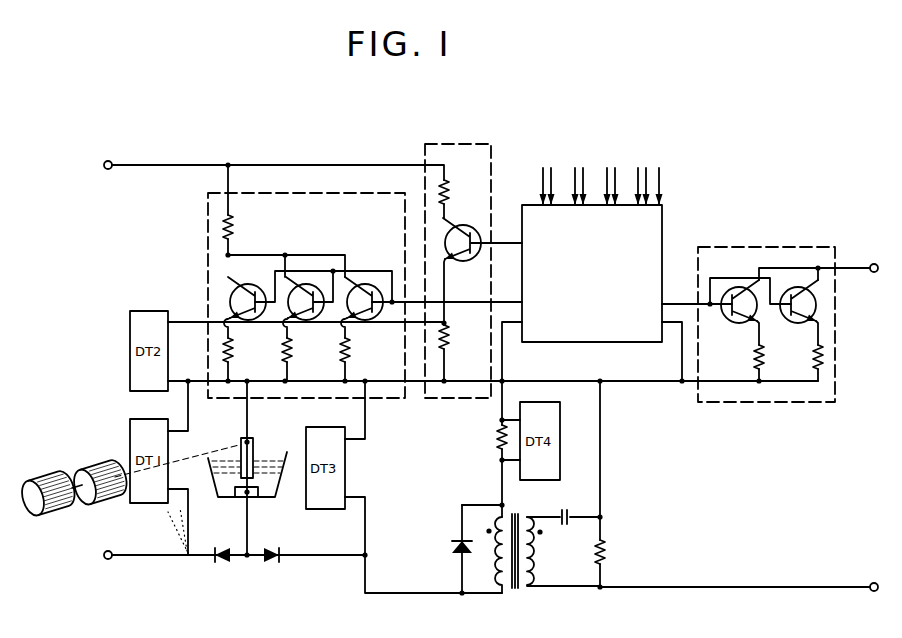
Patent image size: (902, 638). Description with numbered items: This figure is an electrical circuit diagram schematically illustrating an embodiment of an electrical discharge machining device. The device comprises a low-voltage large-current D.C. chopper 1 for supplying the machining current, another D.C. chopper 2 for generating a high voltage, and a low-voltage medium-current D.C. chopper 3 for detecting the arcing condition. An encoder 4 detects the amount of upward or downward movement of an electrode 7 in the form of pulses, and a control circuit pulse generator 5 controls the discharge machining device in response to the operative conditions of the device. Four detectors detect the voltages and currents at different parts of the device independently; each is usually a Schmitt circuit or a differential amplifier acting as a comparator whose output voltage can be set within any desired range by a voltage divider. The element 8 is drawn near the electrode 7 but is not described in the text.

The low-voltage large-current D.C. chopper 1 is at (208, 217).
The D.C. chopper 2 is at (836, 324).
The low-voltage medium-current D.C. chopper 3 is at (474, 143).
The encoder 4 is at (60, 503).
The control circuit pulse generator 5 is at (663, 223).
The electrode 7 is at (254, 447).
The level detector contact 8 is at (258, 495).